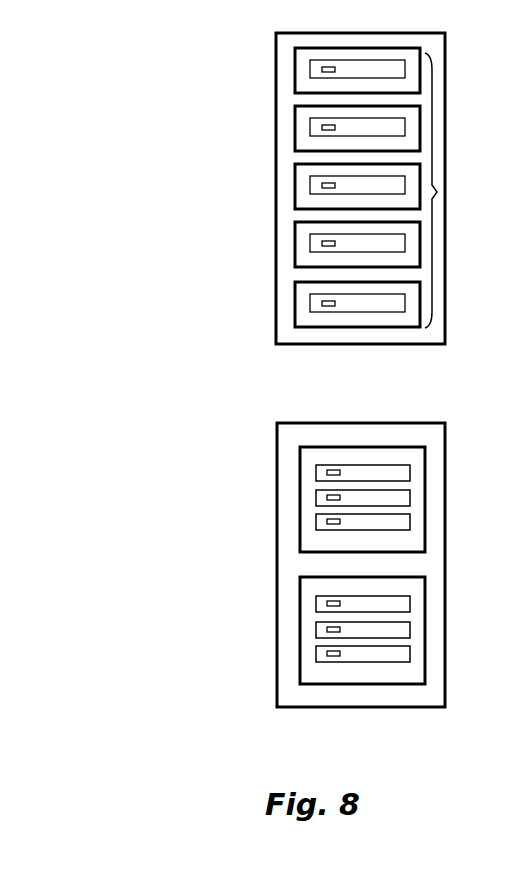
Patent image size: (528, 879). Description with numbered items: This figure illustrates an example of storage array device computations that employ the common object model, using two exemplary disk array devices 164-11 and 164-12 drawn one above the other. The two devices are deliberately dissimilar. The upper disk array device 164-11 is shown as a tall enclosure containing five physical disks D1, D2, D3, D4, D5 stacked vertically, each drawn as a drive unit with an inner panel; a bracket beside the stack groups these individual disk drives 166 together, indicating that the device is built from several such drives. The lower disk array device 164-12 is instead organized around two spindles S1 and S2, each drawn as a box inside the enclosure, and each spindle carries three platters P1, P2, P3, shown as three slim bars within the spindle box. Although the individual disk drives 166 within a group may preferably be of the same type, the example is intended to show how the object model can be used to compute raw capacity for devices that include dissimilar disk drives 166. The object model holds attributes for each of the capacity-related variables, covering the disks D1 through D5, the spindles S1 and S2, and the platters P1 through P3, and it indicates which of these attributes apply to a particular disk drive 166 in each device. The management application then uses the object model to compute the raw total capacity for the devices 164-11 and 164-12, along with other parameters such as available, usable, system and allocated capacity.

The physical disk D1 is at (295, 48).
The physical disk D2 is at (295, 106).
The physical disk D3 is at (295, 164).
The physical disk D4 is at (295, 222).
The physical disk D5 is at (295, 282).
The disk drive 166 is at (437, 192).
The disk array device 164-11 is at (276, 344).
The disk array device 164-12 is at (445, 423).
The spindle S1 is at (300, 447).
The spindle S2 is at (425, 580).
The platter P1 is at (316, 472).
The platter P2 is at (316, 499).
The platter P3 is at (316, 525).